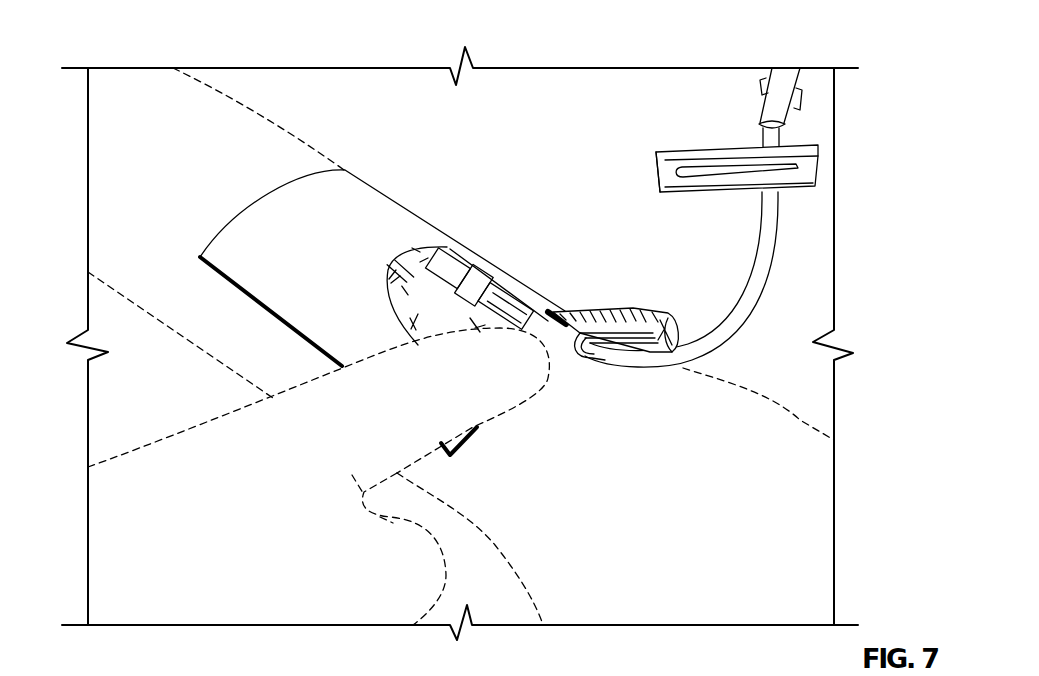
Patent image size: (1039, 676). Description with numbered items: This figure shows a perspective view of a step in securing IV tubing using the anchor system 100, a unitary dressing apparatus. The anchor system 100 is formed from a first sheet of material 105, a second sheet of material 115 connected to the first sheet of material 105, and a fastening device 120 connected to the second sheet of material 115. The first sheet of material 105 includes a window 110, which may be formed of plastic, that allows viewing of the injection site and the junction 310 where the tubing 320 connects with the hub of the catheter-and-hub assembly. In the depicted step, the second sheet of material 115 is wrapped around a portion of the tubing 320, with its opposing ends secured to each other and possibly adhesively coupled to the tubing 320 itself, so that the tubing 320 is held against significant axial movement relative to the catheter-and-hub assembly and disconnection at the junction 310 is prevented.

The anchor system 100 is at (440, 327).
The first sheet of material 105 is at (397, 218).
The window 110 is at (409, 277).
The second sheet of material 115 is at (573, 340).
The fastening device 120 is at (631, 308).
The junction 310 is at (490, 277).
The tubing 320 is at (762, 262).